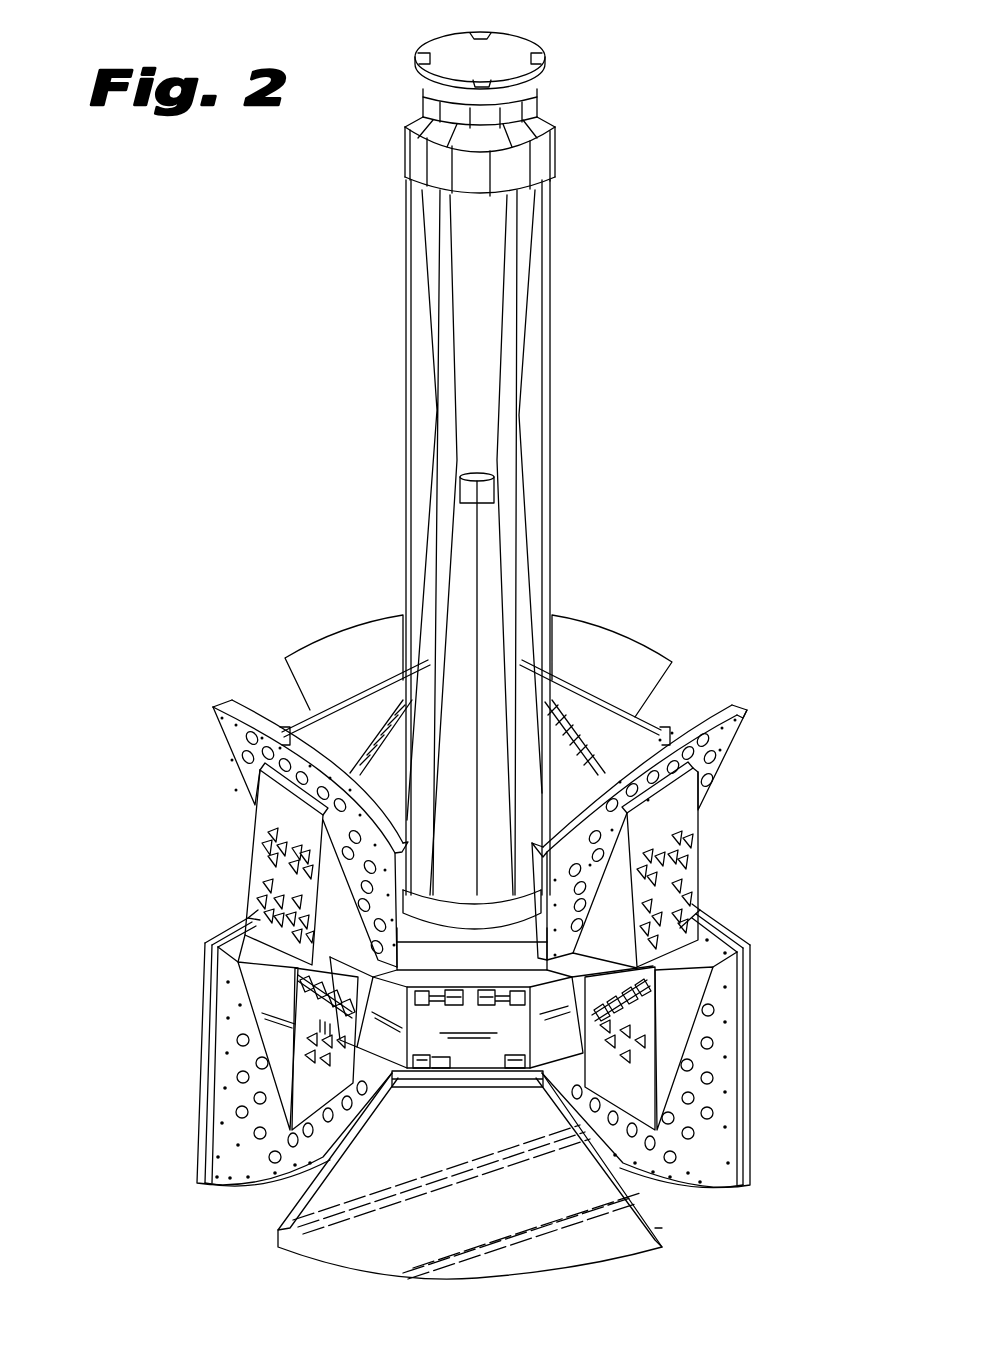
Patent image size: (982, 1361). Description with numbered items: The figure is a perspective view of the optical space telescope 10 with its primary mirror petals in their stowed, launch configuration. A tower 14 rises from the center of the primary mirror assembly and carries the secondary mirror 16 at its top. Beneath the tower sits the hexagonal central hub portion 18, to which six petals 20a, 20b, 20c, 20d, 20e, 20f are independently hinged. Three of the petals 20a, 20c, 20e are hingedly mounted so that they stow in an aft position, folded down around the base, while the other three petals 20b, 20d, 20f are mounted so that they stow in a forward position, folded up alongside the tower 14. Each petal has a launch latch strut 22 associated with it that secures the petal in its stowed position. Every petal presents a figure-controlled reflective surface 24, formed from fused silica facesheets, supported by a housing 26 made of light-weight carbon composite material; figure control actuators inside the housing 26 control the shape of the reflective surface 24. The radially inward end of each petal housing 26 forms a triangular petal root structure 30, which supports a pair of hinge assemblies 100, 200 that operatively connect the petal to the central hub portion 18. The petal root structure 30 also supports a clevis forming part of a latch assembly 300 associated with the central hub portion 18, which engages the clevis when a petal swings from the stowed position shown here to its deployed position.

The optical space telescope 10 is at (300, 345).
The tower 14 is at (555, 240).
The secondary mirror 16 is at (555, 62).
The central hub portion 18 is at (442, 933).
The petal 20a is at (325, 1242).
The petal 20b is at (740, 748).
The petal 20c is at (752, 1132).
The petal 20d is at (650, 642).
The petal 20e is at (200, 1130).
The petal 20f is at (225, 735).
The launch latch strut 22 is at (378, 690).
The figure-controlled reflective surface 24 is at (472, 1220).
The housing 26 is at (240, 1010).
The petal root structure 30 is at (692, 872).
The hinge assembly 100 is at (438, 1074).
The hinge assembly 200 is at (525, 1075).
The latch assembly 300 is at (492, 1008).